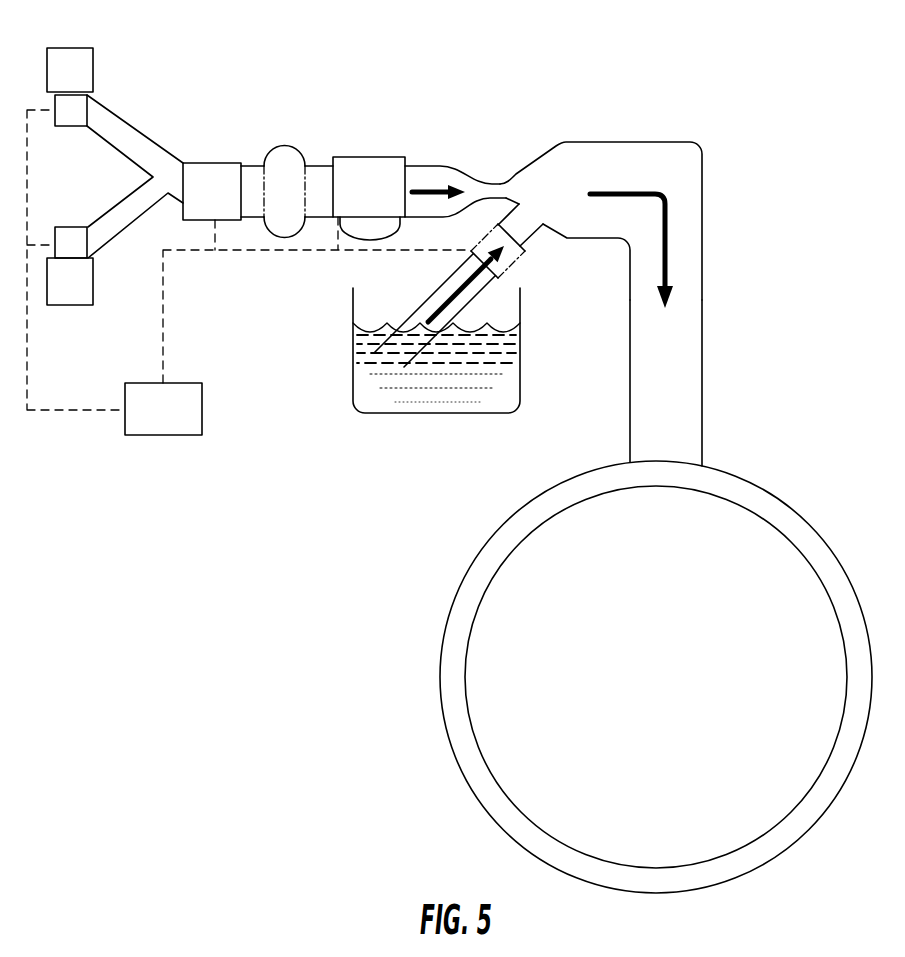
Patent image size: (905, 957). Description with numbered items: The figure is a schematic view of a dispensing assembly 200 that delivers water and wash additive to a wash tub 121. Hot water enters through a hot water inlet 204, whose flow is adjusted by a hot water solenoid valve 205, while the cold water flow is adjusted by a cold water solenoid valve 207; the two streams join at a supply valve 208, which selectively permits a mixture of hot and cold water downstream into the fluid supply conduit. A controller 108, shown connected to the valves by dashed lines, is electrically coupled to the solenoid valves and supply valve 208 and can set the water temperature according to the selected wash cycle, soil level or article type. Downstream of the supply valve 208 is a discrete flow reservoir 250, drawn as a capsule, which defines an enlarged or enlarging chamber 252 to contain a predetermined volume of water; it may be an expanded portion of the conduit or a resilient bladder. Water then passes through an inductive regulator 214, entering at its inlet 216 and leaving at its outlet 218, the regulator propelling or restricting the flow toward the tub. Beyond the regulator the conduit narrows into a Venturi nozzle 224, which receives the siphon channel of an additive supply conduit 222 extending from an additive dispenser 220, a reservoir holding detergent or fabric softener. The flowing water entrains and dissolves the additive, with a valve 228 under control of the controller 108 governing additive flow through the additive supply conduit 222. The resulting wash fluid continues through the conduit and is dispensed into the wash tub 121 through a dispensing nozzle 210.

The dispensing assembly 200 is at (333, 550).
The hot water inlet 204 is at (68, 52).
The hot water solenoid valve 205 is at (75, 110).
The cold water solenoid valve 207 is at (75, 243).
The supply valve 208 is at (203, 165).
The enlarged or enlarging chamber 252 is at (255, 212).
The flow reservoir 250 is at (283, 145).
The inlet 216 is at (324, 214).
The inductive regulator 214 is at (377, 157).
The outlet 218 is at (416, 168).
The Venturi nozzle 224 is at (521, 148).
The dispensing nozzle 210 is at (684, 440).
The valve 228 is at (508, 268).
The additive supply conduit 222 is at (443, 285).
The additive dispenser 220 is at (430, 413).
The controller 108 is at (150, 422).
The wash tub 121 is at (442, 640).